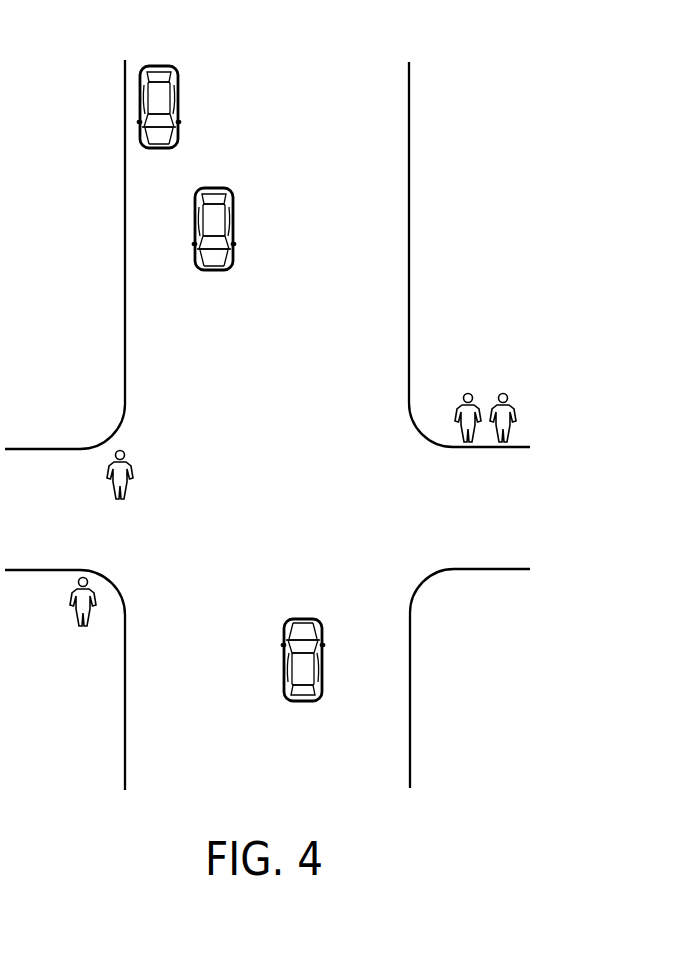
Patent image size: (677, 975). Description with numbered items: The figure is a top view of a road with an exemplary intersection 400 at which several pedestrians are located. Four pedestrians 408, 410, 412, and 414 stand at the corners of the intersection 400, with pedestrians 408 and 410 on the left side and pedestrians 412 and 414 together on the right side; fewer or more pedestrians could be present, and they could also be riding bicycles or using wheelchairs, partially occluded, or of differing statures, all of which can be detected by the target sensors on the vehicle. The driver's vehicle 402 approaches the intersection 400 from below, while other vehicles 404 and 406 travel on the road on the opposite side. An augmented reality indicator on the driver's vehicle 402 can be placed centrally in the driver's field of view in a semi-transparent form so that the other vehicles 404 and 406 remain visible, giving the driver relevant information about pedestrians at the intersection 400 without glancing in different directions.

The intersection 400 is at (514, 214).
The driver's vehicle 402 is at (301, 617).
The other vehicle 404 is at (158, 149).
The other vehicle 406 is at (215, 270).
The pedestrian 408 is at (126, 452).
The pedestrian 410 is at (84, 577).
The pedestrian 412 is at (469, 393).
The pedestrian 414 is at (513, 406).